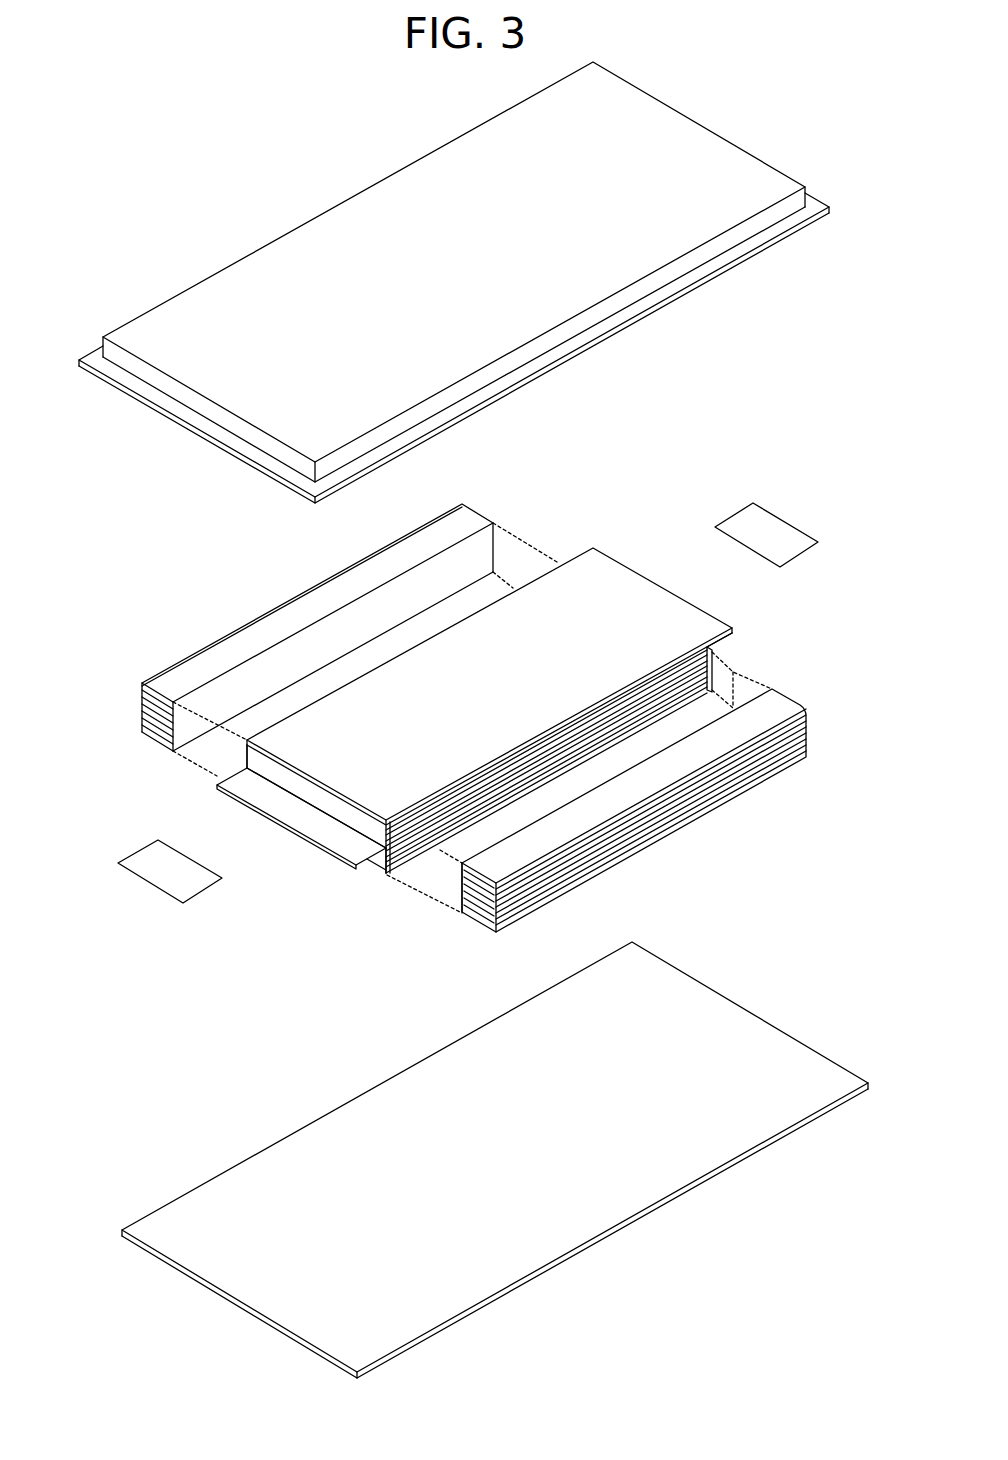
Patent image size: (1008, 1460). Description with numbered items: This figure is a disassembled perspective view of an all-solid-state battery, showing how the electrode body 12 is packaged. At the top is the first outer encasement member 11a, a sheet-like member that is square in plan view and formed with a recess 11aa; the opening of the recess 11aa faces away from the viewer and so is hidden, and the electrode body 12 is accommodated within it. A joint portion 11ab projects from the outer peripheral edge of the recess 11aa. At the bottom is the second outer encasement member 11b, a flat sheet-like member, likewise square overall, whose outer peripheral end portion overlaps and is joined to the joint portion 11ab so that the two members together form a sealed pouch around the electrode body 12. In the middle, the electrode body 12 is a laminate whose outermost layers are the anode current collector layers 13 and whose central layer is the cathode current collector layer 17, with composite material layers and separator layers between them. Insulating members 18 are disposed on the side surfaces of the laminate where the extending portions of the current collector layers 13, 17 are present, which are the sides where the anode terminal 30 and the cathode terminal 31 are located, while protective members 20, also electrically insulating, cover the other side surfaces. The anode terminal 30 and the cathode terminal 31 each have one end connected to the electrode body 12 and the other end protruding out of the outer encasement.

The first outer encasement member 11a is at (439, 282).
The recess 11aa is at (322, 243).
The joint portion 11ab is at (97, 332).
The second outer encasement member 11b is at (193, 1135).
The electrode body 12 is at (107, 617).
The anode current collector layer 13 is at (583, 572).
The cathode current collector layer 17 is at (333, 840).
The insulating member 18 is at (290, 782).
The protective member 20 is at (193, 612).
The anode terminal 30 is at (779, 535).
The cathode terminal 31 is at (140, 862).